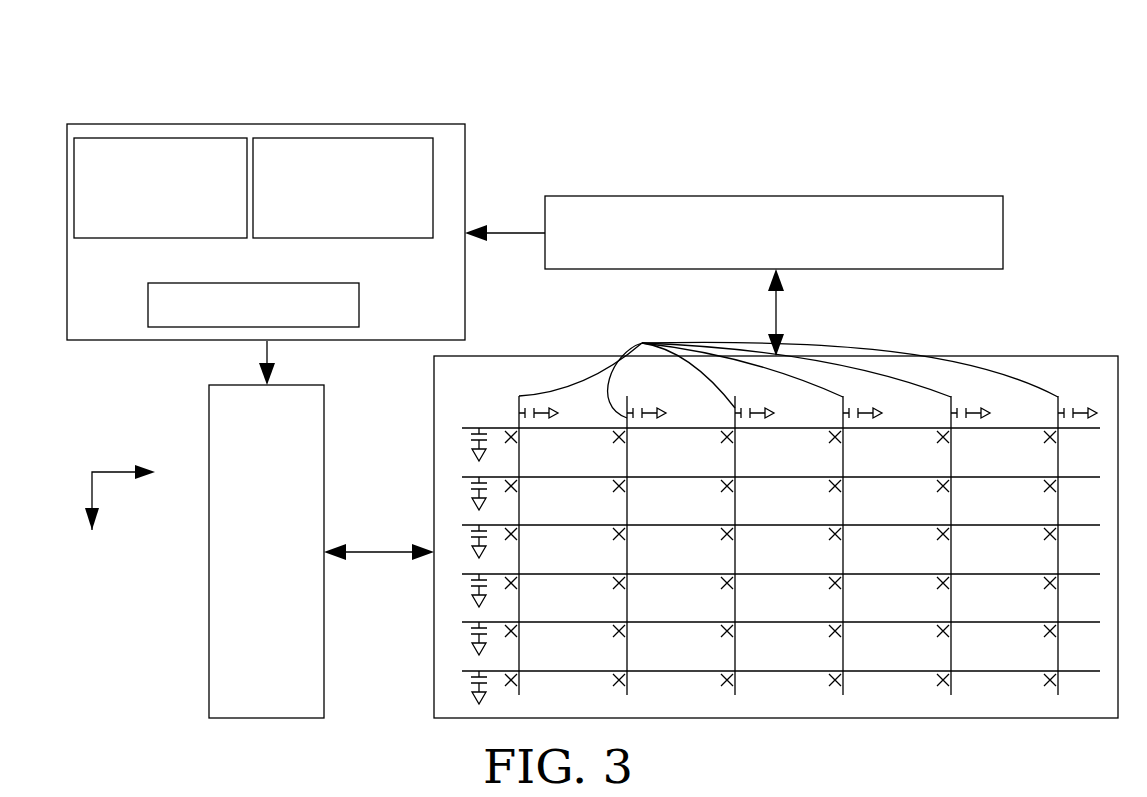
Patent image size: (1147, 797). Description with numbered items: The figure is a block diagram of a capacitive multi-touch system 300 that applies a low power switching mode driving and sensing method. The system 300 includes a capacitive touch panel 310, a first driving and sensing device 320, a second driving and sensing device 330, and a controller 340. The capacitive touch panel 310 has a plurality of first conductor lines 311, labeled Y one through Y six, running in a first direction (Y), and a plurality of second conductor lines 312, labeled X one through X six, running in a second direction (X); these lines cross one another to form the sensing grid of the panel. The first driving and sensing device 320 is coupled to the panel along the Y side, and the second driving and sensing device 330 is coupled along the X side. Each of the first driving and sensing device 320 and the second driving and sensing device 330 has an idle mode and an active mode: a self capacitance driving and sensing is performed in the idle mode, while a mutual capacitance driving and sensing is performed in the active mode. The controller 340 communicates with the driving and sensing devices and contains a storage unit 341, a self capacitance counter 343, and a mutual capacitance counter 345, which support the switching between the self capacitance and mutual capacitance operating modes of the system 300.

The capacitive multi-touch system 300 is at (519, 108).
The capacitive touch panel 310 is at (538, 356).
The first conductor lines 311 is at (502, 428).
The second conductor lines 312 is at (788, 364).
The first driving and sensing device 320 is at (324, 585).
The second driving and sensing device 330 is at (903, 269).
The controller 340 is at (203, 341).
The storage unit 341 is at (315, 327).
The self capacitance counter 343 is at (160, 238).
The mutual capacitance counter 345 is at (353, 238).